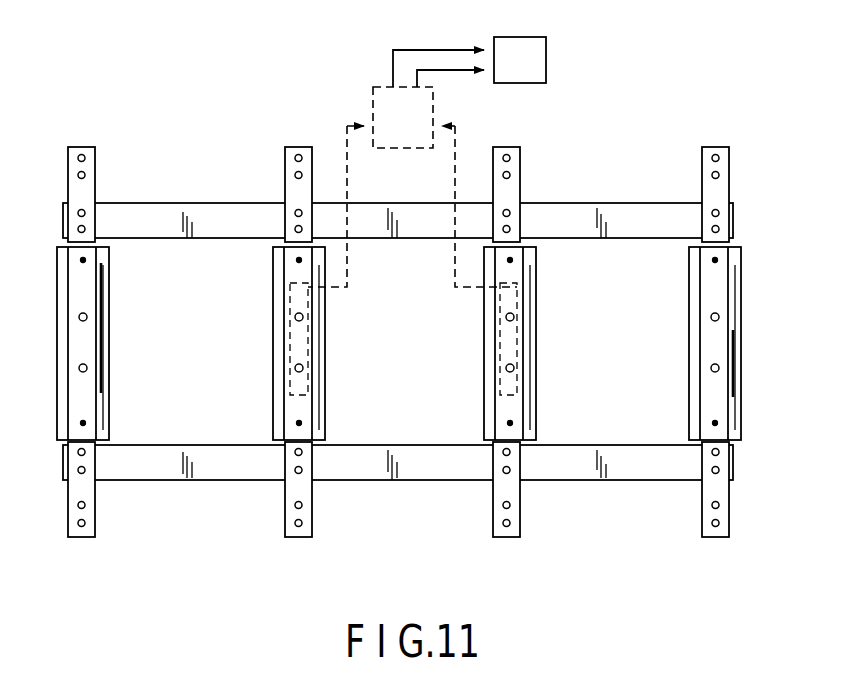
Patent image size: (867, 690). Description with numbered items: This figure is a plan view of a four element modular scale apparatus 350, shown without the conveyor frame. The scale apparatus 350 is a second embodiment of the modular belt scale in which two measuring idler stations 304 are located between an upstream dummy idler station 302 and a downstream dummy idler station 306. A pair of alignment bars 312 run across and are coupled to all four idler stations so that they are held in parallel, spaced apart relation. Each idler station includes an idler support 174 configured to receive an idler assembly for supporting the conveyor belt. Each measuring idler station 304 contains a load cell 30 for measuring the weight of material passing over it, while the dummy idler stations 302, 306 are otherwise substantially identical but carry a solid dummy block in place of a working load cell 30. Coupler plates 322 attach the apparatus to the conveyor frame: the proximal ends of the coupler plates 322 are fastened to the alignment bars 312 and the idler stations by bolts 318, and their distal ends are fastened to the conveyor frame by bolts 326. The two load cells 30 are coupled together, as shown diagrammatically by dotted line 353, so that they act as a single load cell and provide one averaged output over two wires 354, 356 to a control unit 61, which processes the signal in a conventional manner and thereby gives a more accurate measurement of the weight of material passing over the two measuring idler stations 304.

The load cell 30 is at (310, 392).
The control unit 61 is at (540, 84).
The idler support 174 is at (104, 410).
The upstream dummy idler station 302 is at (130, 343).
The measuring idler station 304 is at (439, 343).
The downstream dummy idler station 306 is at (756, 343).
The alignment bar 312 is at (245, 215).
The bolt 318 is at (85, 210).
The coupler plate 322 is at (95, 155).
The bolt 326 is at (302, 505).
The scale apparatus 350 is at (486, 143).
The dotted line 353 is at (372, 110).
The wire 354 is at (457, 47).
The wire 356 is at (478, 73).